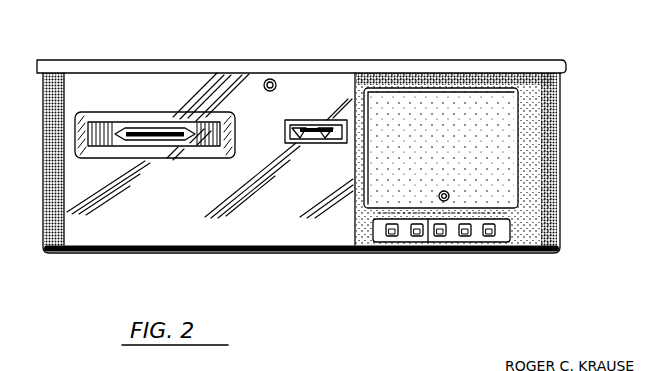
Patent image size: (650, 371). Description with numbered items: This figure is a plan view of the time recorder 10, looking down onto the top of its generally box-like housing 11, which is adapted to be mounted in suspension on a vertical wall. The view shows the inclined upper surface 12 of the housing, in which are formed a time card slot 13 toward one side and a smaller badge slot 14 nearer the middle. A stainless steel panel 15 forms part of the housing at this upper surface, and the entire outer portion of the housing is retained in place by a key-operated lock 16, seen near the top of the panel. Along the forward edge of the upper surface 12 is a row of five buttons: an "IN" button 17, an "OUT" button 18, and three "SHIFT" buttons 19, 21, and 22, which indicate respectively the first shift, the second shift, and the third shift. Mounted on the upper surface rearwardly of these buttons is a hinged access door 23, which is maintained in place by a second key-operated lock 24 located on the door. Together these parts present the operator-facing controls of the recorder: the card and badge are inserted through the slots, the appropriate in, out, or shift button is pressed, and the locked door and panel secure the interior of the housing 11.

The time recorder 10 is at (358, 62).
The housing 11 is at (86, 80).
The inclined upper surface 12 is at (175, 232).
The time card slot 13 is at (145, 132).
The badge slot 14 is at (307, 128).
The stainless steel panel 15 is at (197, 80).
The key-operated lock 16 is at (273, 79).
The "IN" button 17 is at (392, 238).
The "OUT" button 18 is at (417, 238).
The "SHIFT" button 19 is at (440, 238).
The "SHIFT" button 21 is at (465, 238).
The "SHIFT" button 22 is at (489, 238).
The hinged access door 23 is at (510, 157).
The key-operated lock 24 is at (449, 191).